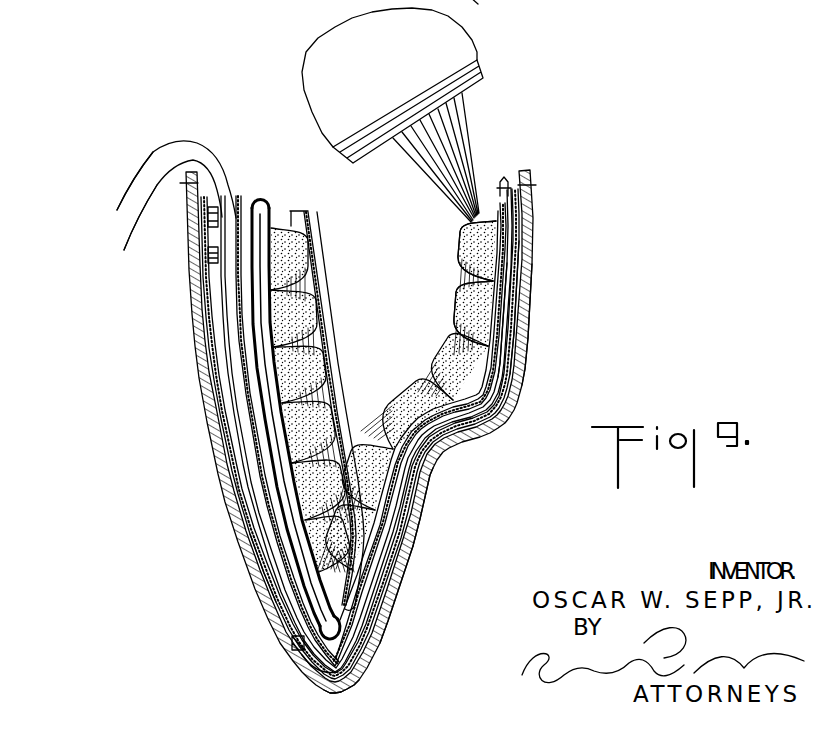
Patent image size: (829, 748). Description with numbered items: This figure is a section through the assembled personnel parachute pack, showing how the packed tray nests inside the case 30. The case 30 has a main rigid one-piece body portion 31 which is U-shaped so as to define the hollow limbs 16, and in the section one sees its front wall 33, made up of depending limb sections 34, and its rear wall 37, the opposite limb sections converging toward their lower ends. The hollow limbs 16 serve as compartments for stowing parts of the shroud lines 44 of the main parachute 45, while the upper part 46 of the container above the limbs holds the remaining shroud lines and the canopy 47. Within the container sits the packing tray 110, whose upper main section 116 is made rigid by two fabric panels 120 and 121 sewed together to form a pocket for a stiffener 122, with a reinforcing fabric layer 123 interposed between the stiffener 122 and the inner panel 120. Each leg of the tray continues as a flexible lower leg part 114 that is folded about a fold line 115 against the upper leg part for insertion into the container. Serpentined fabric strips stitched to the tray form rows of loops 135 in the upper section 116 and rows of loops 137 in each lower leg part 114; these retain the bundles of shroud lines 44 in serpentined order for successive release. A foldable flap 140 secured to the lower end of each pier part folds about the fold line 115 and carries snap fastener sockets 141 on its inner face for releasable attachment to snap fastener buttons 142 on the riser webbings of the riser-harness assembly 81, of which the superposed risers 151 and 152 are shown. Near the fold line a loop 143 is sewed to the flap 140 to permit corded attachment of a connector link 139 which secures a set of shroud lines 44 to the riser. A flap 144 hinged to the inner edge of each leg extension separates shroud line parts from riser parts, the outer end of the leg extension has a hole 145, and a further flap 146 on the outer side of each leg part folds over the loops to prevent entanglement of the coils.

The hollow limbs 16 is at (358, 686).
The case 30 is at (398, 592).
The main rigid one-piece body portion 31 is at (526, 370).
The front wall 33 is at (203, 386).
The depending limb sections 34 is at (292, 645).
The rear wall 37 is at (426, 502).
The shroud lines 44 is at (275, 212).
The main parachute 45 is at (487, 71).
The upper part of the container 46 is at (418, 221).
The canopy 47 is at (342, 62).
The riser-harness assembly 81 is at (198, 148).
The packing tray 110 is at (201, 311).
The lower leg part 114 is at (281, 405).
The fold line 115 is at (474, 1).
The upper main section of the tray 116 is at (519, 312).
The inner panel 120 is at (506, 268).
The outer panel 121 is at (513, 244).
The stiffener 122 is at (510, 190).
The reinforcing fabric layer 123 is at (507, 218).
The loops 135 is at (462, 250).
The loops 137 is at (314, 265).
The connector link 139 is at (321, 628).
The foldable flap 140 is at (249, 524).
The snap fastener sockets 141 is at (208, 257).
The snap fastener buttons 142 is at (207, 226).
The loop 143 is at (316, 668).
The flap 144 is at (253, 337).
The hole 145 is at (261, 206).
The flap 146 is at (328, 333).
The riser 151 is at (126, 247).
The riser 152 is at (137, 175).